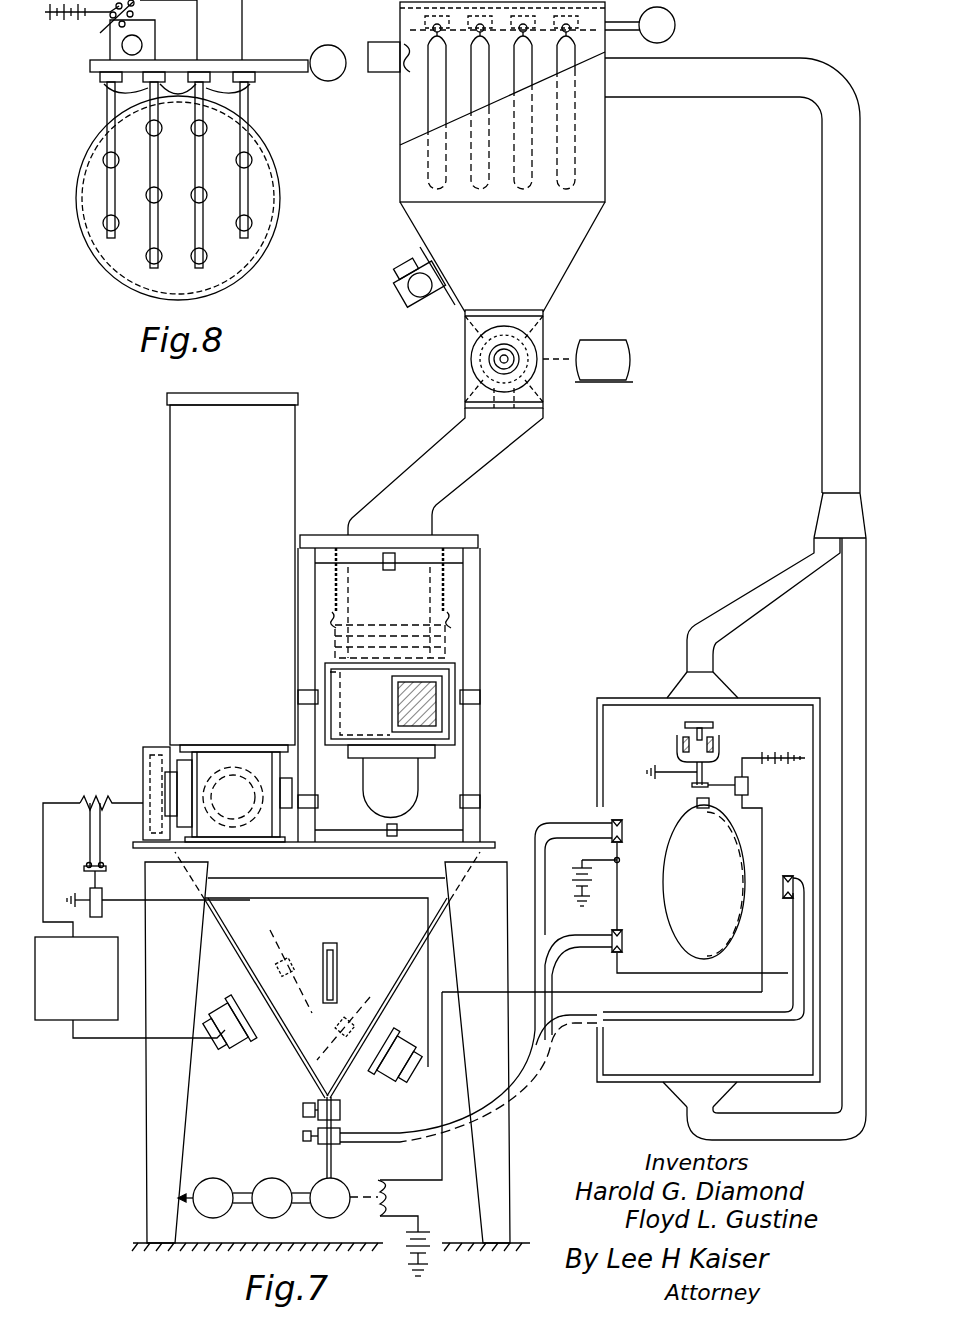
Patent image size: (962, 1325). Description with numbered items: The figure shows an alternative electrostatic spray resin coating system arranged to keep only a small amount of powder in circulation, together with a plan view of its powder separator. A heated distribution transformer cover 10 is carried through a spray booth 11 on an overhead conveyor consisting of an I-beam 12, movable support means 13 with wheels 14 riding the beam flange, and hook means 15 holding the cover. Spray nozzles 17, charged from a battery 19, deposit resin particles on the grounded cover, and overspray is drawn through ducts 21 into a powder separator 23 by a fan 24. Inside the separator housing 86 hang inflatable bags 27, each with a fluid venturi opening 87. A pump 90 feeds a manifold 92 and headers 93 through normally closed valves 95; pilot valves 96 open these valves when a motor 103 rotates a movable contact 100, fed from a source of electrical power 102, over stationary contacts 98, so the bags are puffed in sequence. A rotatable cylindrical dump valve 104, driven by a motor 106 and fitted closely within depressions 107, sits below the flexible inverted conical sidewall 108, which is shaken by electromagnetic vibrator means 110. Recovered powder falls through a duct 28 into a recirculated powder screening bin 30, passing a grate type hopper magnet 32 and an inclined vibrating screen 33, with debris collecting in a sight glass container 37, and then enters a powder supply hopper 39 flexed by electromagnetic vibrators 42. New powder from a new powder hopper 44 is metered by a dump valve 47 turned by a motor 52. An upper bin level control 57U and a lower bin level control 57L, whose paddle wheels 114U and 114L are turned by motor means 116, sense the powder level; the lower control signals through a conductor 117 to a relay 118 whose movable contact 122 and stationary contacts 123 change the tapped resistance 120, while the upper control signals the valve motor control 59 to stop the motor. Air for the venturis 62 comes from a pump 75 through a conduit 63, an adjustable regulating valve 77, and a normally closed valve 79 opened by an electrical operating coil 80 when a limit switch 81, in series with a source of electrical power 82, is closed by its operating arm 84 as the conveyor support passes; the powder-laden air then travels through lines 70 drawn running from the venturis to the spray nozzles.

In FIG. 7, the distribution transformer cover 10 is at (672, 896).
In FIG. 7, the spray booth 11 is at (755, 698).
In FIG. 7, the I-beam 12 is at (713, 722).
In FIG. 7, the movable support means 13 is at (692, 792).
In FIG. 7, the wheels 14 is at (680, 738).
In FIG. 7, the hook means 15 is at (668, 832).
In FIG. 7, the spray nozzles 17 is at (618, 820).
In FIG. 7, the battery 19 is at (578, 868).
In FIG. 7, the ducts 21 is at (730, 598).
In FIG. 7, the powder separator 23 is at (607, 175).
In FIG. 7, the fan 24 is at (408, 72).
In FIG. 8, the inflatable bags 27 is at (150, 250).
In FIG. 7, the inflatable bags 27 is at (437, 92).
In FIG. 7, the duct 28 is at (468, 470).
In FIG. 7, the recirculated powder screening bin 30 is at (470, 535).
In FIG. 7, the grate type hopper magnet 32 is at (450, 640).
In FIG. 7, the inclined vibrating screen 33 is at (410, 730).
In FIG. 7, the sight glass container 37 is at (415, 800).
In FIG. 7, the powder supply hopper 39 is at (398, 985).
In FIG. 7, the electromagnetic vibrators 42 is at (337, 955).
In FIG. 7, the new powder hopper 44 is at (250, 643).
In FIG. 7, the dump valve 47 is at (270, 768).
In FIG. 7, the motor 52 is at (242, 828).
In FIG. 7, the upper bin level control 57U is at (240, 1055).
In FIG. 7, the lower bin level control 57L is at (372, 1082).
In FIG. 7, the valve motor control 59 is at (53, 1020).
In FIG. 7, the venturis 62 is at (345, 1145).
In FIG. 7, the conduit 63 is at (188, 1200).
In FIG. 7, the tube 70 is at (556, 828).
In FIG. 7, the pump 75 is at (217, 1178).
In FIG. 7, the adjustable regulating valve 77 is at (272, 1178).
In FIG. 7, the normally closed valve 79 is at (338, 1210).
In FIG. 7, the electrical operating coil 80 is at (395, 1198).
In FIG. 7, the limit switch 81 is at (748, 788).
In FIG. 7, the source of electrical power 82 is at (770, 750).
In FIG. 7, the operating arm 84 is at (720, 780).
In FIG. 7, the housing 86 is at (400, 100).
In FIG. 7, the fluid venturi opening 87 is at (501, 40).
In FIG. 8, the pump 90 is at (328, 45).
In FIG. 7, the pump 90 is at (675, 30).
In FIG. 8, the manifold 92 is at (262, 60).
In FIG. 7, the manifold 92 is at (405, 27).
In FIG. 8, the headers 93 is at (111, 200).
In FIG. 7, the headers 93 is at (505, 36).
In FIG. 8, the normally closed valve 95 is at (108, 92).
In FIG. 8, the pilot valve 96 is at (100, 77).
In FIG. 7, the pilot valve 96 is at (600, 40).
In FIG. 8, the stationary contacts 98 is at (110, 25).
In FIG. 8, the movable contact 100 is at (140, 17).
In FIG. 8, the source of electrical power 102 is at (75, 30).
In FIG. 8, the motor 103 is at (142, 45).
In FIG. 7, the rotatable cylindrical dump valve 104 is at (528, 340).
In FIG. 7, the motor 106 is at (628, 355).
In FIG. 7, the depressions 107 is at (509, 411).
In FIG. 7, the inverted conical sidewall 108 is at (575, 262).
In FIG. 7, the electromagnetic vibrator means 110 is at (404, 320).
In FIG. 7, the paddle wheel 114U is at (270, 930).
In FIG. 7, the paddle wheel 114L is at (357, 1016).
In FIG. 7, the motor means 116 is at (220, 1005).
In FIG. 7, the conductor 117 is at (362, 896).
In FIG. 7, the relay 118 is at (102, 893).
In FIG. 7, the resistance 120 is at (110, 803).
In FIG. 7, the movable contact 122 is at (86, 874).
In FIG. 7, the stationary contacts 123 is at (90, 862).